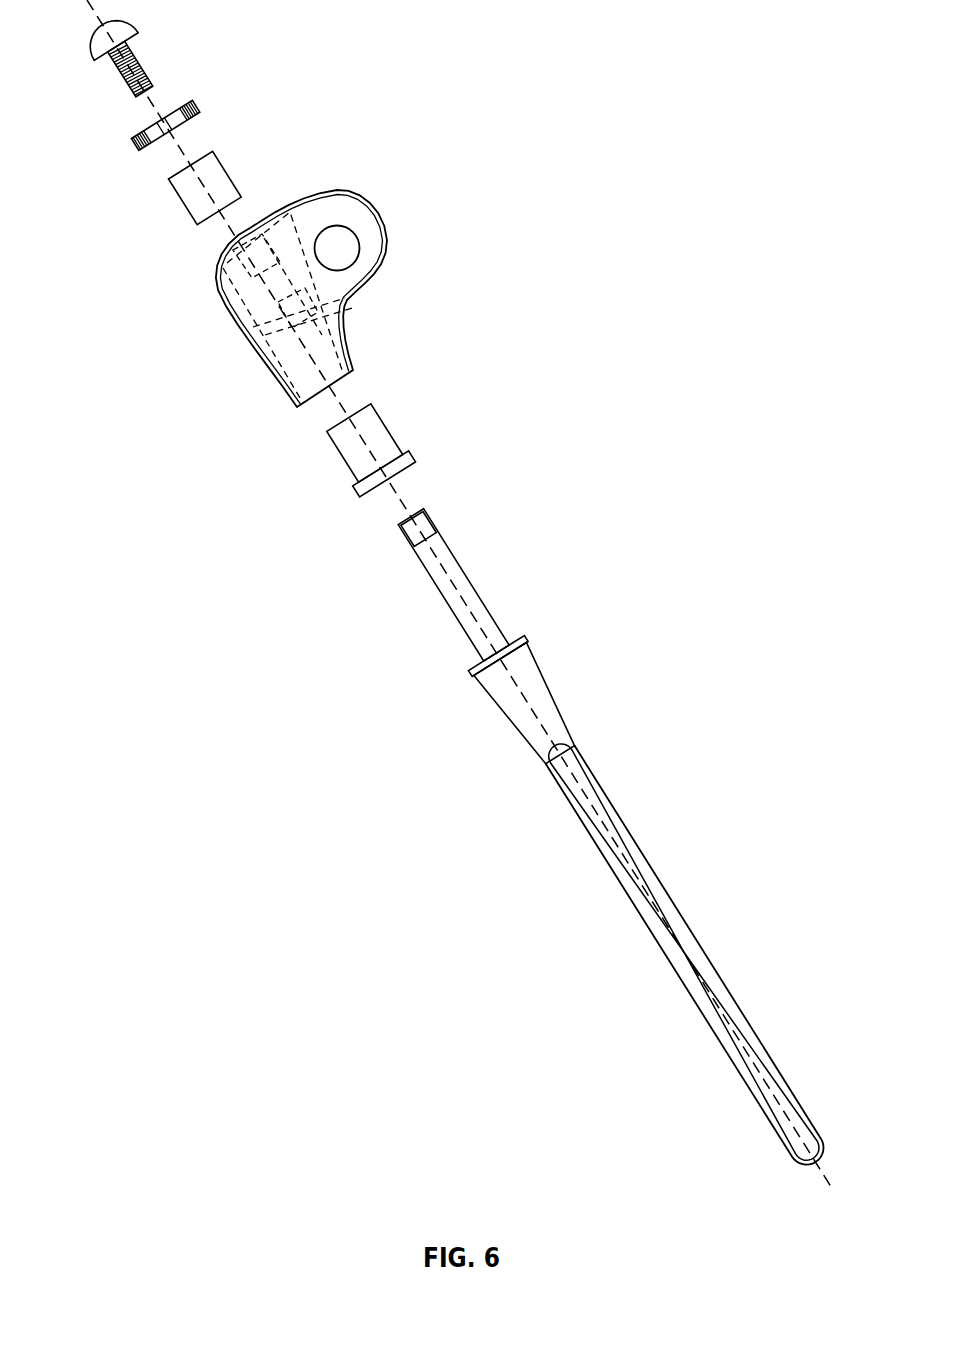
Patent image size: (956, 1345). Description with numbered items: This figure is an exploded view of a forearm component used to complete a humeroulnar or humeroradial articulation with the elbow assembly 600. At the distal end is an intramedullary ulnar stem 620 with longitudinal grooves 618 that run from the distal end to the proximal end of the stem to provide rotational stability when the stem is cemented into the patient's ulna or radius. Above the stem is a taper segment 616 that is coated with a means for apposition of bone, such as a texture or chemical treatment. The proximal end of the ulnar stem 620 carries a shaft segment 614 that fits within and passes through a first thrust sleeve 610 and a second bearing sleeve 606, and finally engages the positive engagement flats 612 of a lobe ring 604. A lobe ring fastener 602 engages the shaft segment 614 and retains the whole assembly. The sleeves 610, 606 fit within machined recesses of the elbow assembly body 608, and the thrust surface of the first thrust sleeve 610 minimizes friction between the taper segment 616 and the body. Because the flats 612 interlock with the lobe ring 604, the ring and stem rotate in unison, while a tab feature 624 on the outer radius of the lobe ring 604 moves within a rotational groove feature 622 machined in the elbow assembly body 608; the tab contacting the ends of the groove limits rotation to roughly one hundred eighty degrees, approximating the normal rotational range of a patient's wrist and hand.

The elbow assembly 600 is at (413, 60).
The lobe ring fastener 602 is at (118, 26).
The lobe ring 604 is at (137, 144).
The second bearing sleeve 606 is at (180, 201).
The elbow assembly body 608 is at (215, 315).
The first thrust sleeve 610 is at (340, 460).
The positive engagement flats 612 is at (424, 520).
The shaft segment 614 is at (455, 623).
The taper segment 616 is at (508, 718).
The longitudinal grooves 618 is at (642, 880).
The intramedullary ulnar stem 620 is at (650, 935).
The rotational groove feature 622 is at (292, 210).
The tab feature 624 is at (200, 107).